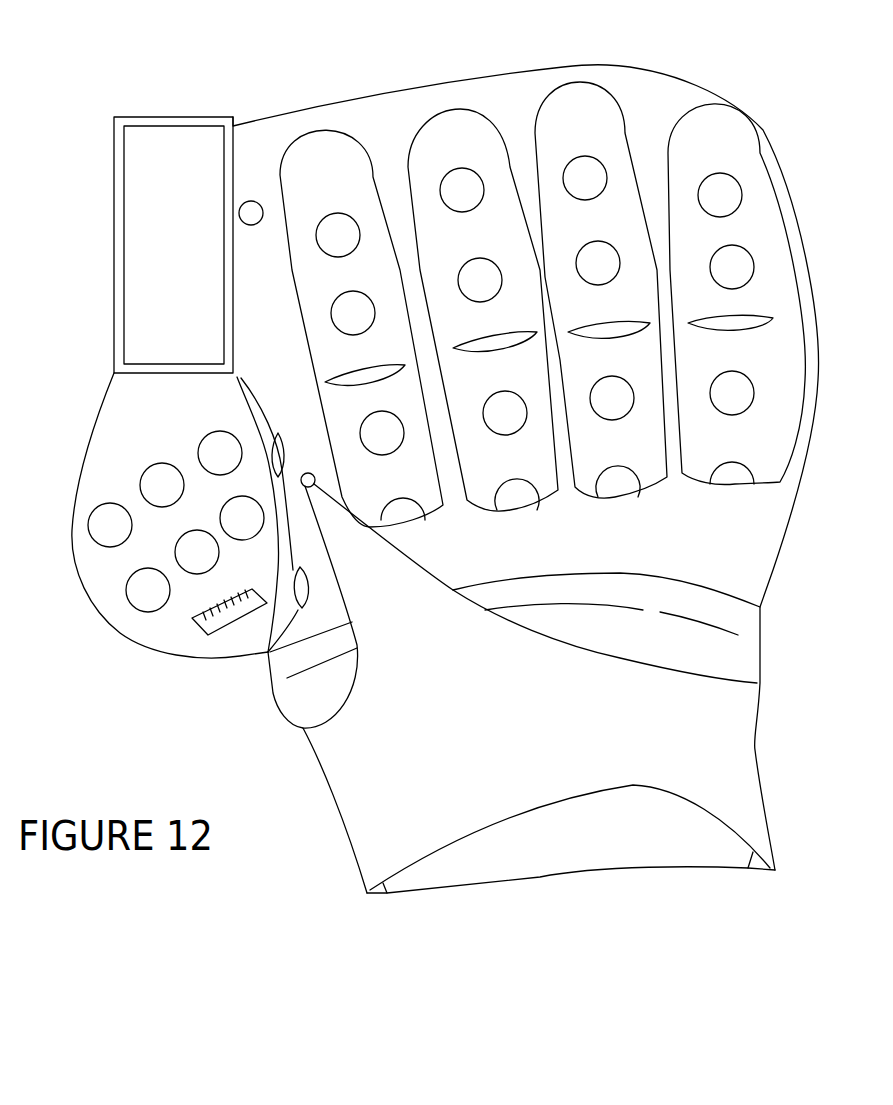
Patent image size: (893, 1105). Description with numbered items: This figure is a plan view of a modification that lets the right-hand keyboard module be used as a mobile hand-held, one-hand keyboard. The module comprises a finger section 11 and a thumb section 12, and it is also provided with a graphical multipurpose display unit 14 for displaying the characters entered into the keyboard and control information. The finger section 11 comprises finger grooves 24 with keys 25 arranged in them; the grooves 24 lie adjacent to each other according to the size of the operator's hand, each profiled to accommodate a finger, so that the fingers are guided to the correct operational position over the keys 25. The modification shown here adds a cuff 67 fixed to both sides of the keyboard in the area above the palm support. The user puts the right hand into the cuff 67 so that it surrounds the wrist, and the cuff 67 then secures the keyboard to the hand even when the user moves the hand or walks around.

The finger section 11 is at (368, 133).
The thumb section 12 is at (130, 425).
The graphical multipurpose display unit 14 is at (145, 180).
The finger grooves 24 is at (547, 103).
The keys 25 is at (722, 172).
The cuff 67 is at (572, 793).